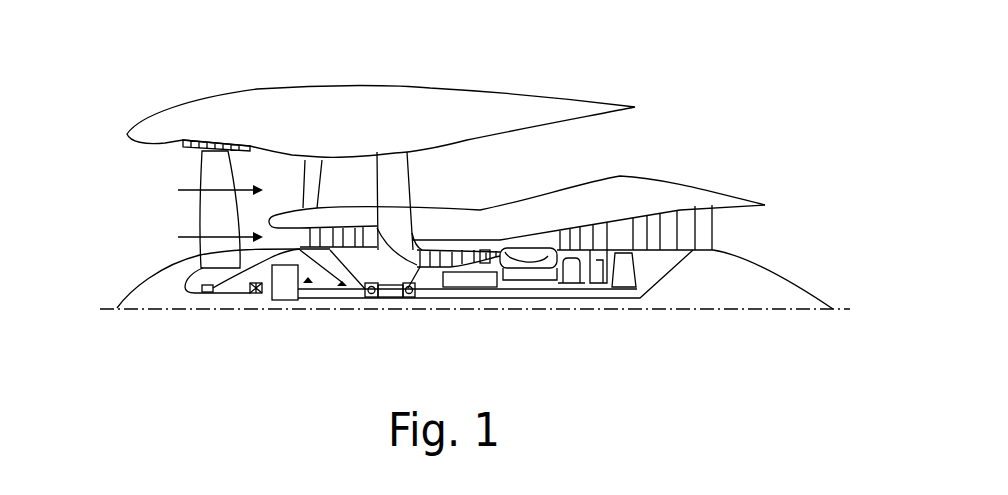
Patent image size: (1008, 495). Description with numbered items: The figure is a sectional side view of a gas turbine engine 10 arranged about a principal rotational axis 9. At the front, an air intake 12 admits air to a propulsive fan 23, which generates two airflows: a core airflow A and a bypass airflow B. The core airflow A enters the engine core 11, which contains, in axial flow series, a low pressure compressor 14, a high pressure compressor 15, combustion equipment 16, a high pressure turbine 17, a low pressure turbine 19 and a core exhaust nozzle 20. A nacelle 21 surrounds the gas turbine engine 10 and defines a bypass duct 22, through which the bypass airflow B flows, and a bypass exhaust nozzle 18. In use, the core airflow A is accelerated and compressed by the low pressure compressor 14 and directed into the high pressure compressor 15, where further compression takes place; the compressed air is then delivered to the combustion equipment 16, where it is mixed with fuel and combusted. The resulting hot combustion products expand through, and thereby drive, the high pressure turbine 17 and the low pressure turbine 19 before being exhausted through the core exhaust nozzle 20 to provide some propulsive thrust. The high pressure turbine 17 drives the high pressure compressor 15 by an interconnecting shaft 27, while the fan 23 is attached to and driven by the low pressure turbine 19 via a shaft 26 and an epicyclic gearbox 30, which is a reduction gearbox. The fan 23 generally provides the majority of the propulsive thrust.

The principal rotational axis 9 is at (735, 312).
The gas turbine engine 10 is at (178, 105).
The core 11 is at (538, 222).
The air intake 12 is at (136, 163).
The low pressure compressor 14 is at (340, 235).
The high pressure compressor 15 is at (462, 250).
The combustion equipment 16 is at (527, 256).
The high pressure turbine 17 is at (577, 232).
The bypass exhaust nozzle 18 is at (728, 103).
The low pressure turbine 19 is at (695, 240).
The core exhaust nozzle 20 is at (775, 240).
The nacelle 21 is at (392, 100).
The bypass duct 22 is at (613, 143).
The propulsive fan 23 is at (207, 223).
The shaft 26 is at (433, 297).
The interconnecting shaft 27 is at (488, 290).
The epicyclic gearbox 30 is at (287, 300).